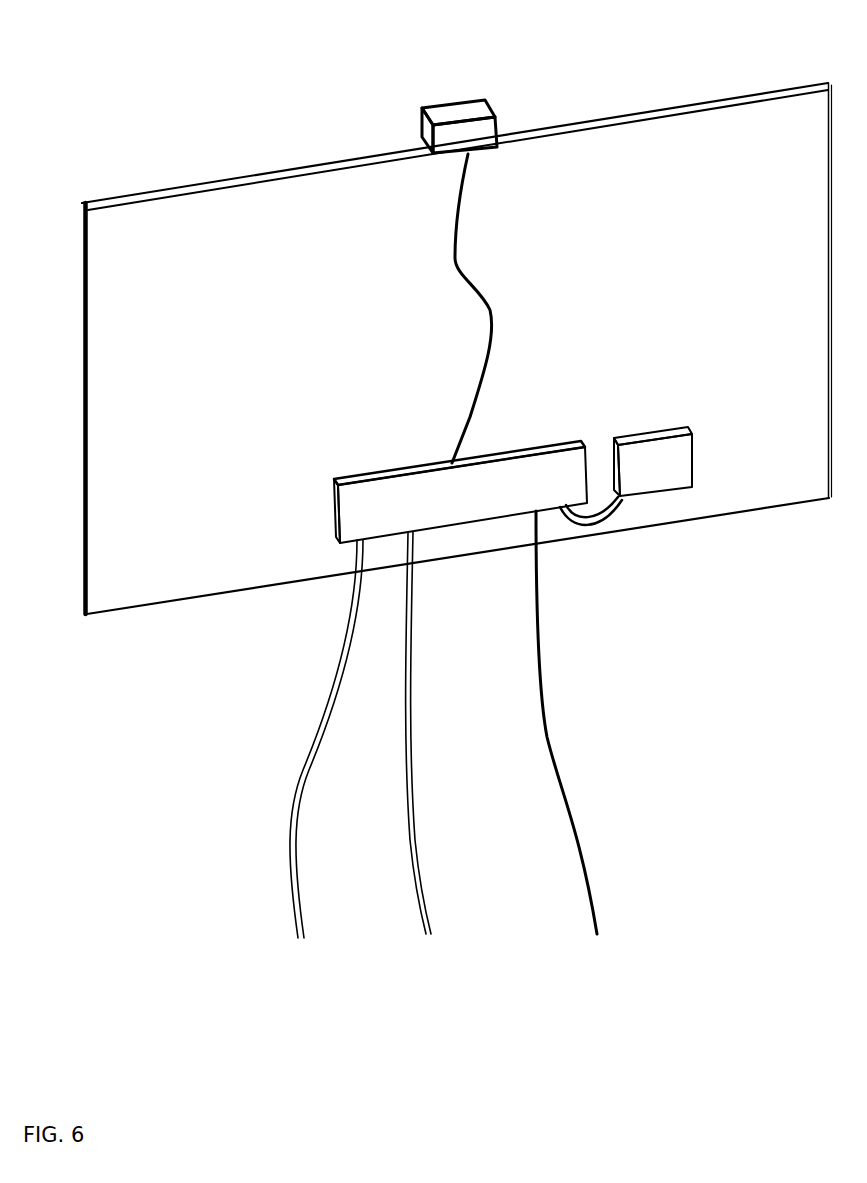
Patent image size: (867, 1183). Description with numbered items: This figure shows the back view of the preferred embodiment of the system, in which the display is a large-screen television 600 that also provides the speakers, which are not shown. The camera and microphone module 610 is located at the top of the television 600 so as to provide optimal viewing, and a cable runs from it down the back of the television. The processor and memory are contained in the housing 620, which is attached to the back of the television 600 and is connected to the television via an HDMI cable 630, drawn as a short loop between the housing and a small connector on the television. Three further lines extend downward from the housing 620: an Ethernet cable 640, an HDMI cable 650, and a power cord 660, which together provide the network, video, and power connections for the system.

The large-screen television 600 is at (288, 228).
The camera and microphone module 610 is at (477, 137).
The housing 620 is at (377, 510).
The HDMI cable 630 is at (616, 528).
The Ethernet cable 640 is at (428, 754).
The HDMI cable 650 is at (319, 758).
The power cord 660 is at (581, 744).